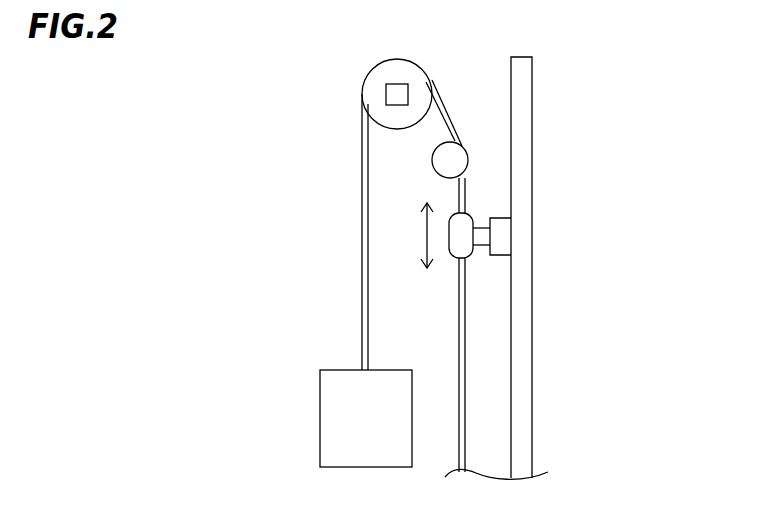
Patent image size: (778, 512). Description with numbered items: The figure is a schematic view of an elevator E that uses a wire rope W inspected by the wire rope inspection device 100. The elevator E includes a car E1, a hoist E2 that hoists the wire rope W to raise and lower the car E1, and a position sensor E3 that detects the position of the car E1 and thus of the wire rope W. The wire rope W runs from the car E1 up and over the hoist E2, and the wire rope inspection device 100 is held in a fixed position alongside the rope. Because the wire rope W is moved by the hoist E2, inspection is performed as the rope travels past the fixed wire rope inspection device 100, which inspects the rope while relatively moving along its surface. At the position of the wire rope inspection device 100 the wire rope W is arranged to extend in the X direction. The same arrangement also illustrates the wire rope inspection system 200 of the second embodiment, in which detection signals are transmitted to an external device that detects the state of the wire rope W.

The elevator E is at (274, 134).
The car E1 is at (320, 384).
The hoist E2 is at (362, 88).
The position sensor E3 is at (388, 83).
The wire rope W is at (362, 183).
The wire rope inspection device 100 is at (543, 220).
The wire rope inspection system 200 is at (480, 212).
The X direction X is at (420, 235).